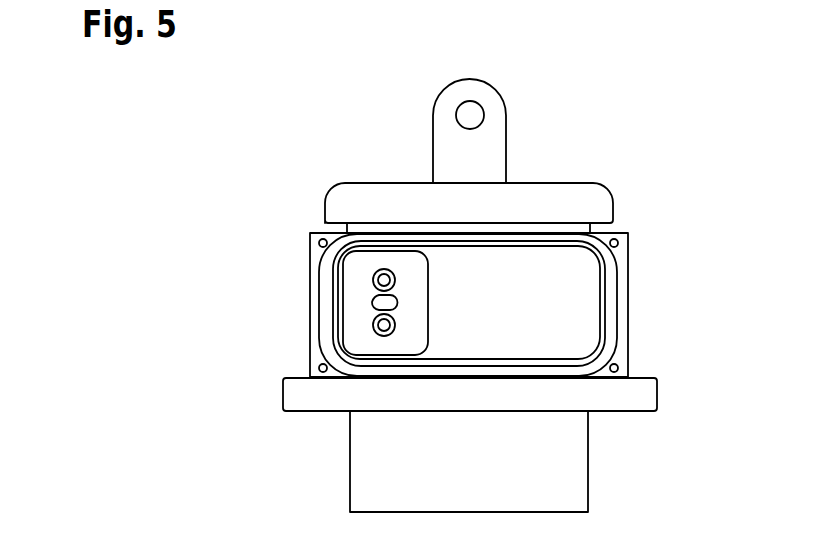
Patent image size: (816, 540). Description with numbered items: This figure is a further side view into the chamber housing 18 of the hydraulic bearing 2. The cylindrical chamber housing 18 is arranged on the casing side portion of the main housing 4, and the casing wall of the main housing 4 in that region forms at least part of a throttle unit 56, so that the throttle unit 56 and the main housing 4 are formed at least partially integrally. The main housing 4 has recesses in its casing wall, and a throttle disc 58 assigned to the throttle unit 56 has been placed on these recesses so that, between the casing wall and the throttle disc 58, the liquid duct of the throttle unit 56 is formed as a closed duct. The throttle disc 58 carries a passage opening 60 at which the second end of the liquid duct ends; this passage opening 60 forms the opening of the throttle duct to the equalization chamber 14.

The hydraulic bearing 2 is at (542, 103).
The main housing 4 is at (342, 197).
The equalization chamber 14 is at (555, 277).
The chamber housing 18 is at (316, 259).
The throttle unit 56 is at (464, 300).
The throttle disc 58 is at (367, 338).
The passage opening 60 is at (372, 300).